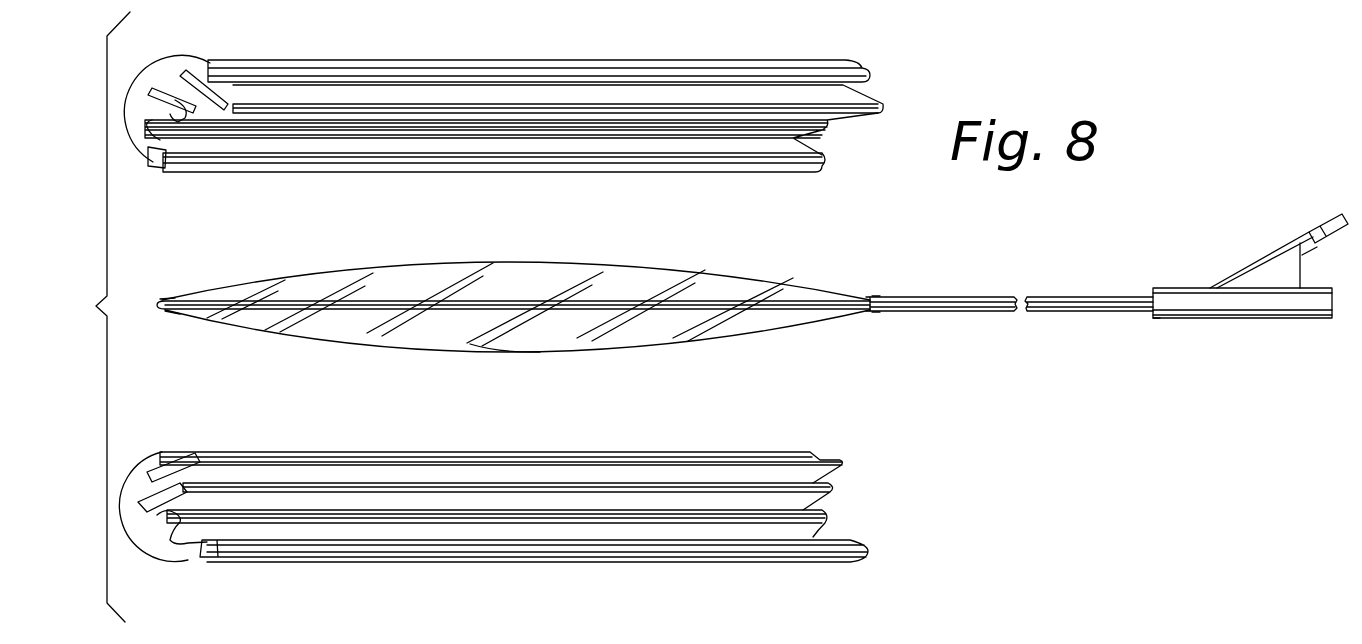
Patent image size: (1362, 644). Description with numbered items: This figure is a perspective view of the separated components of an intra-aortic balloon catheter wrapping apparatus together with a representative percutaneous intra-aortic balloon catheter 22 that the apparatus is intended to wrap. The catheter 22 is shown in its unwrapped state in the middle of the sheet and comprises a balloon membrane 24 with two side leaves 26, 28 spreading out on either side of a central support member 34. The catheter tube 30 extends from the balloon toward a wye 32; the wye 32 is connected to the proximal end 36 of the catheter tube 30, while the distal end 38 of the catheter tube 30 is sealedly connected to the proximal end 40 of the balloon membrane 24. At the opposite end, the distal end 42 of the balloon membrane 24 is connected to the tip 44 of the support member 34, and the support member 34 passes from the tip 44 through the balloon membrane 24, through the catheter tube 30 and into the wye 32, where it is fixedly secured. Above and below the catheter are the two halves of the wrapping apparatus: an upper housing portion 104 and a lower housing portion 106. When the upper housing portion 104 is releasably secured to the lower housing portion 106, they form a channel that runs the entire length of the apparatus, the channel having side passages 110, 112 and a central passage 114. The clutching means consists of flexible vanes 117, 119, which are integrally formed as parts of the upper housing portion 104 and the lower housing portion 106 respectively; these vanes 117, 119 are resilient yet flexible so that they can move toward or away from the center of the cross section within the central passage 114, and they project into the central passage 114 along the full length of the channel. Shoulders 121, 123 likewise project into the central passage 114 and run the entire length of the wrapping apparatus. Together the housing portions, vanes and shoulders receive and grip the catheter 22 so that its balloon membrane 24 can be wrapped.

The intra-aortic balloon catheter 22 is at (950, 286).
The balloon membrane 24 is at (805, 272).
The side leaf 26 is at (625, 278).
The side leaf 28 is at (682, 337).
The catheter tube 30 is at (982, 312).
The wye 32 is at (1172, 288).
The support member 34 is at (342, 303).
The proximal end of catheter tube 36 is at (1150, 313).
The distal end of catheter tube 38 is at (878, 315).
The proximal end of balloon membrane 40 is at (870, 297).
The distal end of balloon membrane 42 is at (176, 318).
The tip of support member 44 is at (163, 301).
The upper housing portion 104 is at (527, 60).
The lower housing portion 106 is at (510, 563).
The side passage 110 is at (150, 150).
The side passage 112 is at (190, 75).
The central passage 114 is at (197, 498).
The flexible vane 117 is at (200, 106).
The flexible vane 119 is at (185, 477).
The shoulder 121 is at (168, 102).
The shoulder 123 is at (160, 513).